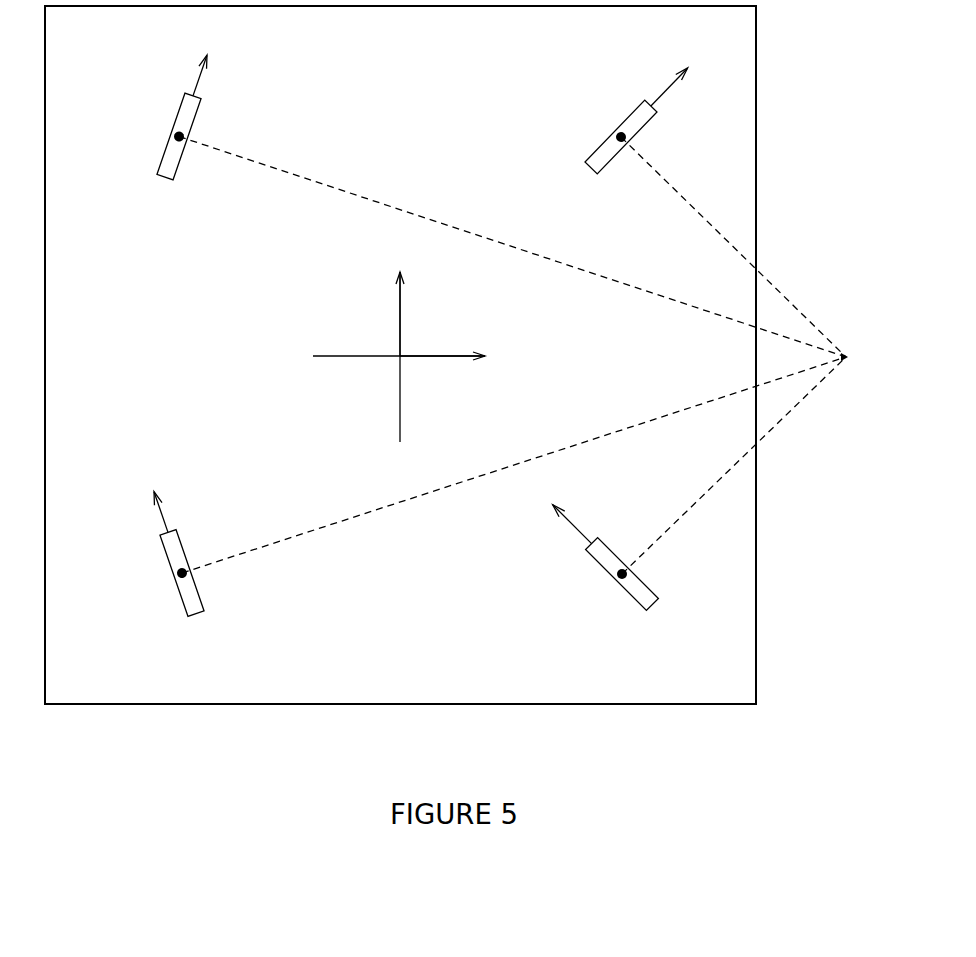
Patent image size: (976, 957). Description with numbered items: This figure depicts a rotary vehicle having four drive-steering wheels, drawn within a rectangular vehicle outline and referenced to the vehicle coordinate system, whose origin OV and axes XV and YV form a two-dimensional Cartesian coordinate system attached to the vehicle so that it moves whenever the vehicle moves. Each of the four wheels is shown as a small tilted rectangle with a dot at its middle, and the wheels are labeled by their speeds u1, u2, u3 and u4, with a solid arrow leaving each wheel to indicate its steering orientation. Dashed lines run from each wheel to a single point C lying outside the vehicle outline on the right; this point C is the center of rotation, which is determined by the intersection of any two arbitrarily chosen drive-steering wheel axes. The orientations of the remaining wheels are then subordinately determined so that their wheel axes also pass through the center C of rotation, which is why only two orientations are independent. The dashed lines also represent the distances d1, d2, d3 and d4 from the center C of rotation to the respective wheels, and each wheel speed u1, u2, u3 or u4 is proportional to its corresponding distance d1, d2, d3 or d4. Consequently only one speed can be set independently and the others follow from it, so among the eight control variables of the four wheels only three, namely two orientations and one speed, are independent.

The speed of first drive-steering wheel u1 is at (612, 137).
The speed of second drive-steering wheel u2 is at (164, 136).
The speed of third drive-steering wheel u3 is at (166, 573).
The speed of fourth drive-steering wheel u4 is at (614, 574).
The distance from center of rotation to first wheel d1 is at (733, 247).
The distance from center of rotation to second wheel d2 is at (512, 247).
The distance from center of rotation to third wheel d3 is at (514, 465).
The distance from center of rotation to fourth wheel d4 is at (734, 465).
The center of rotation C is at (861, 359).
The origin of vehicle coordinate system OV is at (399, 357).
The X axis of vehicle coordinate system XV is at (465, 360).
The Y axis of vehicle coordinate system YV is at (398, 292).